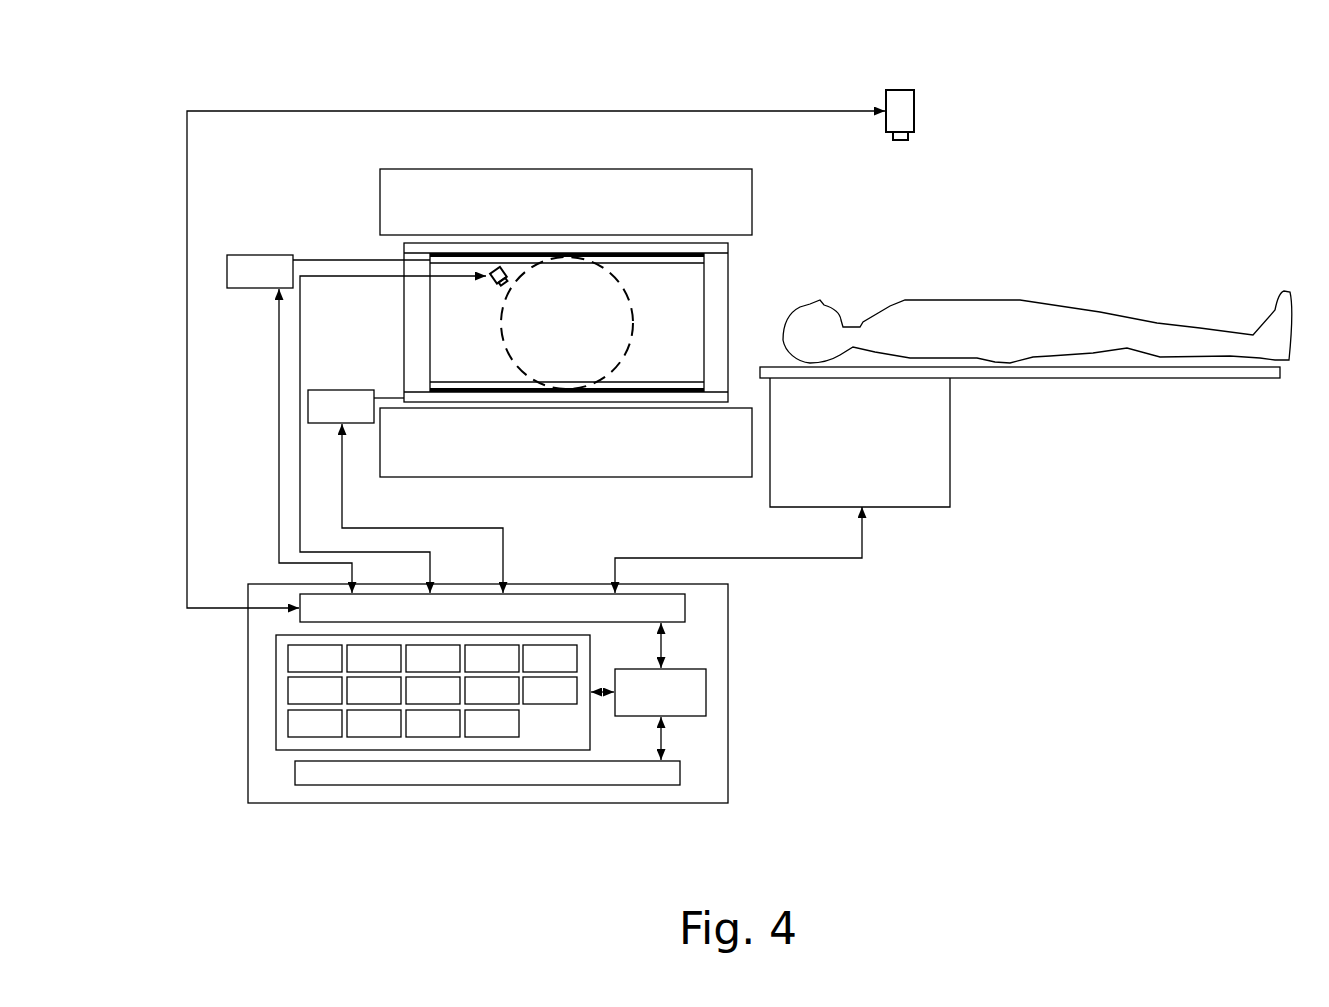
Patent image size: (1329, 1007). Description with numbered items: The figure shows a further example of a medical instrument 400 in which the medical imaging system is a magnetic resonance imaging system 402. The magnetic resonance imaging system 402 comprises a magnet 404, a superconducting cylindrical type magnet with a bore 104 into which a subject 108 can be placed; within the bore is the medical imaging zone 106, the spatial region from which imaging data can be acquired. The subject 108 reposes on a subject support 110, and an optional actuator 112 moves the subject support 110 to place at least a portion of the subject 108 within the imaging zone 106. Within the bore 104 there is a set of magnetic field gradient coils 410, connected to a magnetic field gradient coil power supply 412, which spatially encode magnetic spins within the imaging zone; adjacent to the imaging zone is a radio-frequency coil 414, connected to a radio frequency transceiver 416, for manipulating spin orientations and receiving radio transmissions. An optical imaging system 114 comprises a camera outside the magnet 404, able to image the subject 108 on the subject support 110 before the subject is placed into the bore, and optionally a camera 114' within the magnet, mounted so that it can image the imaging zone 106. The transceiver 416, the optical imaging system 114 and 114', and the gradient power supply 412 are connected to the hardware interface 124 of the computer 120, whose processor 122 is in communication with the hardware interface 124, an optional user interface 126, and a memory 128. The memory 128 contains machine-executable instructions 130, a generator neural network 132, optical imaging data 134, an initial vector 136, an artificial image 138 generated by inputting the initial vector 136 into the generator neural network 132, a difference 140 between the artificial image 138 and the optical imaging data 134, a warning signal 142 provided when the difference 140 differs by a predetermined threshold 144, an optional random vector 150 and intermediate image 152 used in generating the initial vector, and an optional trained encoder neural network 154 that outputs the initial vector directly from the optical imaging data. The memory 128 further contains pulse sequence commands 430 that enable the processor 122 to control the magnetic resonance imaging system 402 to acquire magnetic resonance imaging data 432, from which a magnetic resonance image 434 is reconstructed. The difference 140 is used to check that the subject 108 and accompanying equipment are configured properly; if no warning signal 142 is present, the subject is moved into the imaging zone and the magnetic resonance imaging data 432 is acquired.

The medical instrument 400 is at (1311, 813).
The magnetic resonance imaging system 402 is at (762, 155).
The magnet 404 is at (753, 177).
The bore 104 is at (708, 272).
The medical imaging zone 106 is at (507, 362).
The subject 108 is at (1040, 298).
The subject support 110 is at (1092, 380).
The actuator 112 is at (915, 510).
The optical imaging system 114 is at (958, 115).
The camera within the magnet 114' is at (469, 164).
The magnetic field gradient coils 410 is at (651, 404).
The magnetic field gradient coil power supply 412 is at (341, 406).
The radio-frequency coil 414 is at (635, 262).
The radio frequency transceiver 416 is at (260, 271).
The computer 120 is at (729, 622).
The processor 122 is at (660, 692).
The hardware interface 124 is at (492, 608).
The user interface 126 is at (487, 773).
The memory 128 is at (276, 670).
The machine-executable instructions 130 is at (315, 659).
The generator neural network 132 is at (374, 659).
The optical imaging data 134 is at (433, 659).
The initial vector 136 is at (492, 659).
The artificial image 138 is at (550, 659).
The difference 140 is at (315, 691).
The warning signal 142 is at (374, 691).
The predetermined threshold 144 is at (433, 691).
The random vector 150 is at (492, 691).
The intermediate image 152 is at (550, 691).
The trained encoder neural network 154 is at (315, 724).
The pulse sequence commands 430 is at (374, 724).
The magnetic resonance imaging data 432 is at (433, 724).
The magnetic resonance image 434 is at (492, 724).